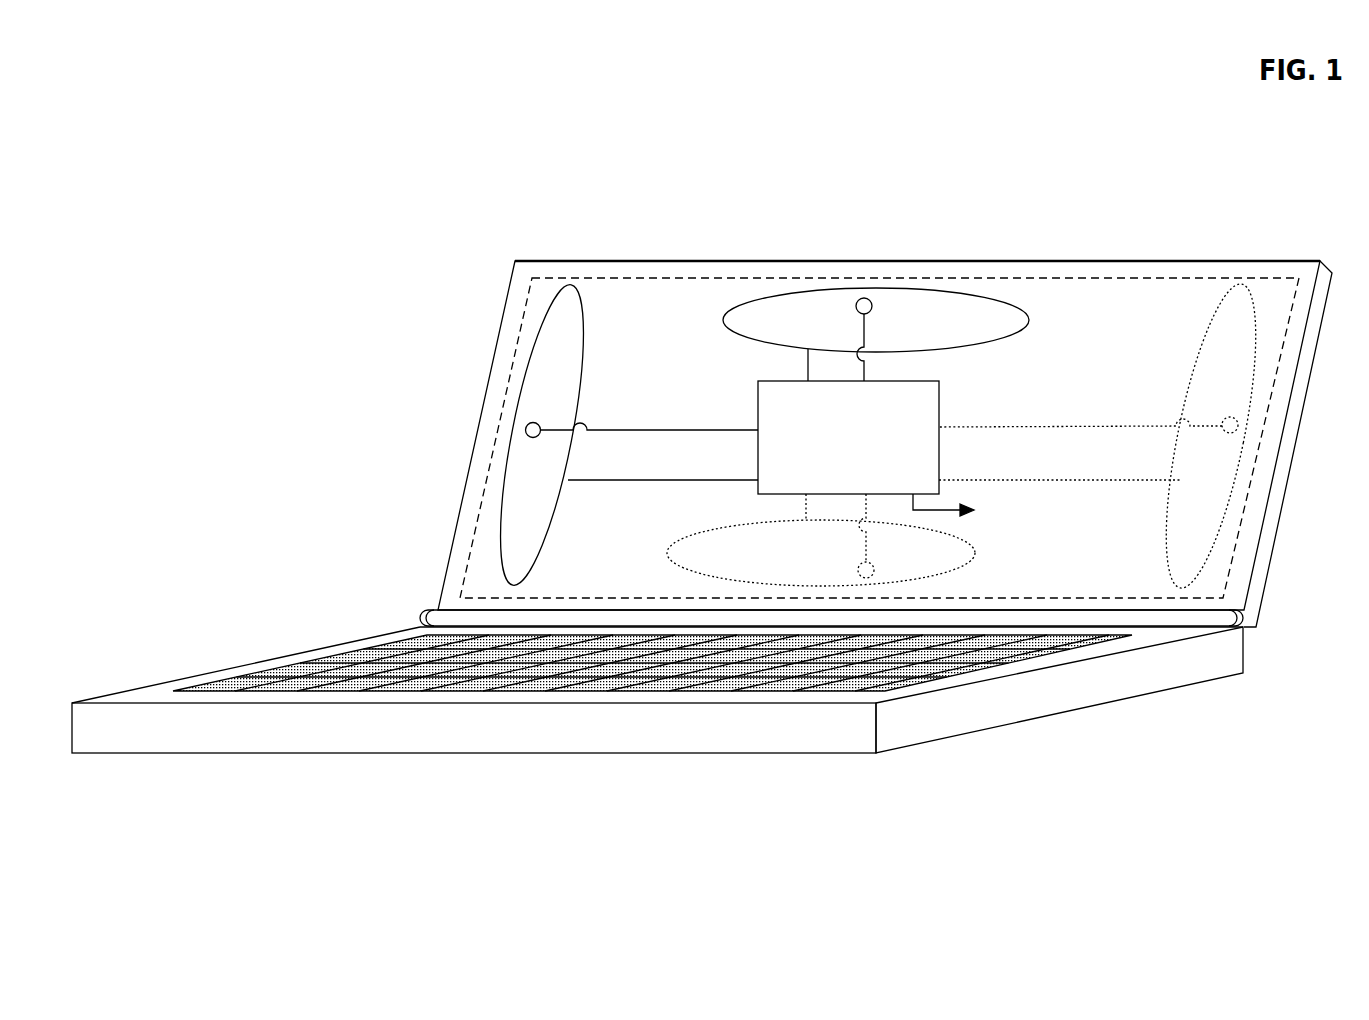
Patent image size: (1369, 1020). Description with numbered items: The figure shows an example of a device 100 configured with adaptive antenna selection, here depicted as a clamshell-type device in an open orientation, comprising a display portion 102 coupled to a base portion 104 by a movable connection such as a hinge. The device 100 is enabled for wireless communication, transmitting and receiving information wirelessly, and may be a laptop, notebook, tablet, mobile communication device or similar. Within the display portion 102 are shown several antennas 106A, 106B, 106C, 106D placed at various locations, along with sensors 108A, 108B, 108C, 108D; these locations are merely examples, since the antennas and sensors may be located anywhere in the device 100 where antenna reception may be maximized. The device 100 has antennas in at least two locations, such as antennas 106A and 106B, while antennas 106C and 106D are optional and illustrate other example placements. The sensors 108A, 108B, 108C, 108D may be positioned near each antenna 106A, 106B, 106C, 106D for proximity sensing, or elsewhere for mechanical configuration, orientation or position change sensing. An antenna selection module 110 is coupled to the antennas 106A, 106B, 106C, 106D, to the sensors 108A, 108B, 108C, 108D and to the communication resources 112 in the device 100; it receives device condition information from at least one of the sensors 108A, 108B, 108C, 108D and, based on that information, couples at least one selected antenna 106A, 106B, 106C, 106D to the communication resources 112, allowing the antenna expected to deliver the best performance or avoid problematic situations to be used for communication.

The device 100 is at (410, 244).
The display portion 102 is at (508, 298).
The base portion 104 is at (290, 648).
The antenna 106A is at (525, 375).
The antenna 106B is at (775, 293).
The antenna 106C is at (1212, 320).
The antenna 106D is at (730, 525).
The sensor 108A is at (524, 428).
The sensor 108B is at (855, 308).
The sensor 108C is at (1224, 420).
The sensor 108D is at (858, 567).
The antenna selection module 110 is at (833, 476).
The communication resources 112 is at (940, 512).